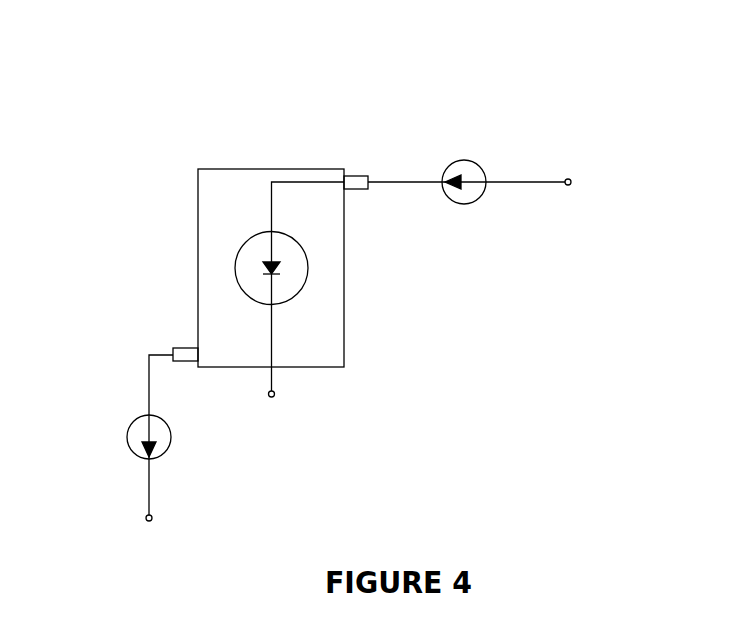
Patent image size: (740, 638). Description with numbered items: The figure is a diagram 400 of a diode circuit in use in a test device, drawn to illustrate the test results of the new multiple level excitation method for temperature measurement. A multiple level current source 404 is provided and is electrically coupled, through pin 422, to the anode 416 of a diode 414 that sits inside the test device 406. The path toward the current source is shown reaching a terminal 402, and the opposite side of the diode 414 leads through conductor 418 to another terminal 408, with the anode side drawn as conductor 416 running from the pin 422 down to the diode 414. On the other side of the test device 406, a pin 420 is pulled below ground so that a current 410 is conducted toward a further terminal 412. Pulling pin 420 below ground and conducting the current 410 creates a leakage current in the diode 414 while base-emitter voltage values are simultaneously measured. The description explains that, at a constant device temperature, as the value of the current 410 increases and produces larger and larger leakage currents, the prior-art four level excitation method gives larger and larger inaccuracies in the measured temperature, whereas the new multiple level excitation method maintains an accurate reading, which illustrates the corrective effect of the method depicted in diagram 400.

The diagram 400 is at (109, 45).
The input terminal 402 is at (569, 185).
The multiple level current source 404 is at (463, 204).
The test device 406 is at (186, 173).
The output terminal 408 is at (276, 396).
The current 410 is at (172, 438).
The terminal 412 is at (145, 518).
The diode 414 is at (322, 276).
The anode 416 is at (263, 212).
The conductor 418 is at (262, 316).
The pin 420 is at (187, 342).
The pin 422 is at (357, 170).